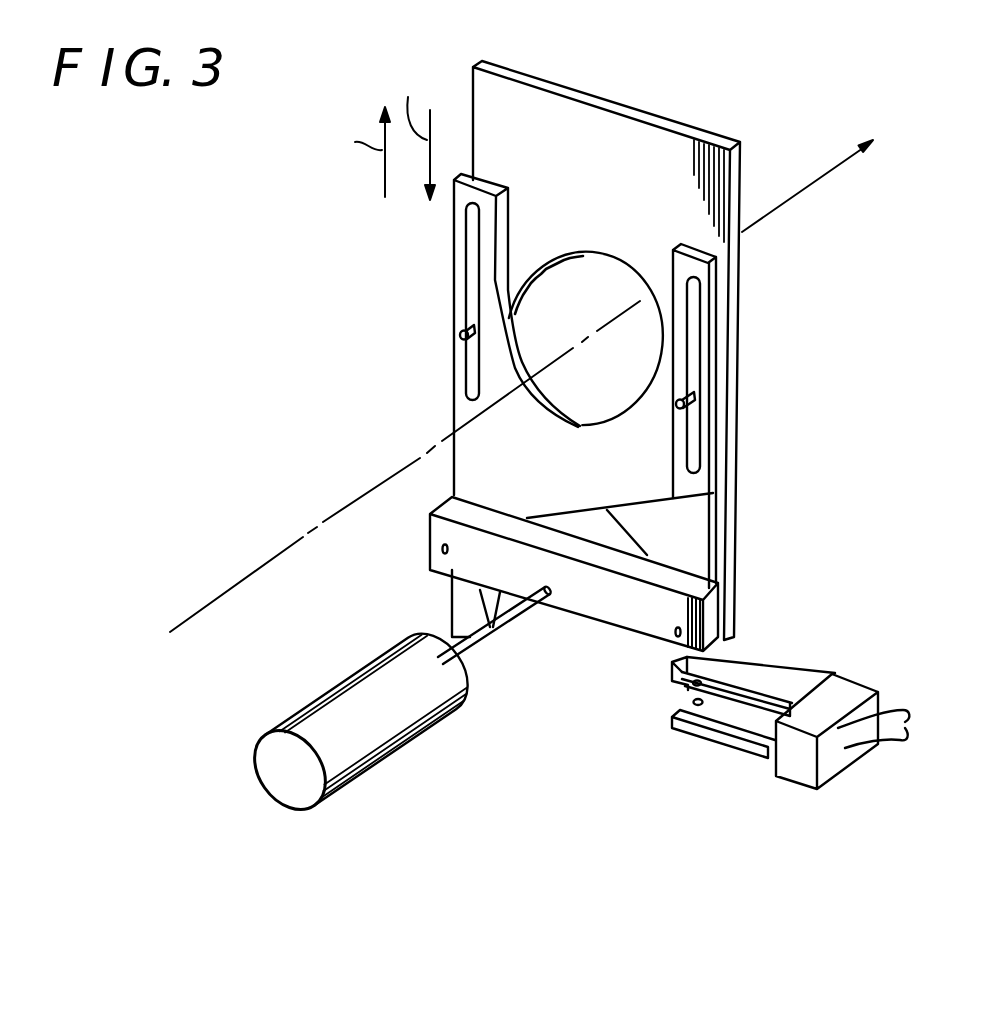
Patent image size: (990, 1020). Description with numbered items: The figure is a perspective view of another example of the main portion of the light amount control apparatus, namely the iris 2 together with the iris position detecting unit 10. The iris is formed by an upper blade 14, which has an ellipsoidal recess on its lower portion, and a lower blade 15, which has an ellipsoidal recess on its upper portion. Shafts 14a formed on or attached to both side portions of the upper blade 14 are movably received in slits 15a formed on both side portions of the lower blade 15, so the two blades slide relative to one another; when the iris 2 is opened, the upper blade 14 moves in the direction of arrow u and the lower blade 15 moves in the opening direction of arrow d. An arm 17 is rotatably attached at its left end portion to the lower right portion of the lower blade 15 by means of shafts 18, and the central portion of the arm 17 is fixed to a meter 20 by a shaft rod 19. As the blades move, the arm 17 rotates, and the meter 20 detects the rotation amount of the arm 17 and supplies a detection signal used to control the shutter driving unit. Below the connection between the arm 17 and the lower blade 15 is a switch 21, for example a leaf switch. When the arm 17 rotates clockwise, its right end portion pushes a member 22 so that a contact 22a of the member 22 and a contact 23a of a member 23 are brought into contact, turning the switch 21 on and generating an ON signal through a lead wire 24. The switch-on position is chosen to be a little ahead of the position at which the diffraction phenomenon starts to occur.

The iris 2 is at (672, 800).
The iris position detecting unit 10 is at (234, 688).
The upper blade 14 is at (647, 135).
The shafts 14a is at (677, 405).
The lower blade 15 is at (677, 317).
The slits 15a is at (473, 252).
The arm 17 is at (588, 612).
The shafts 18 is at (440, 549).
The shaft rod 19 is at (458, 650).
The meter 20 is at (409, 737).
The switch 21 is at (880, 585).
The member 22 is at (767, 677).
The contact 22a is at (692, 655).
The member 23 is at (742, 729).
The contact 23a is at (692, 700).
The lead wire 24 is at (898, 733).